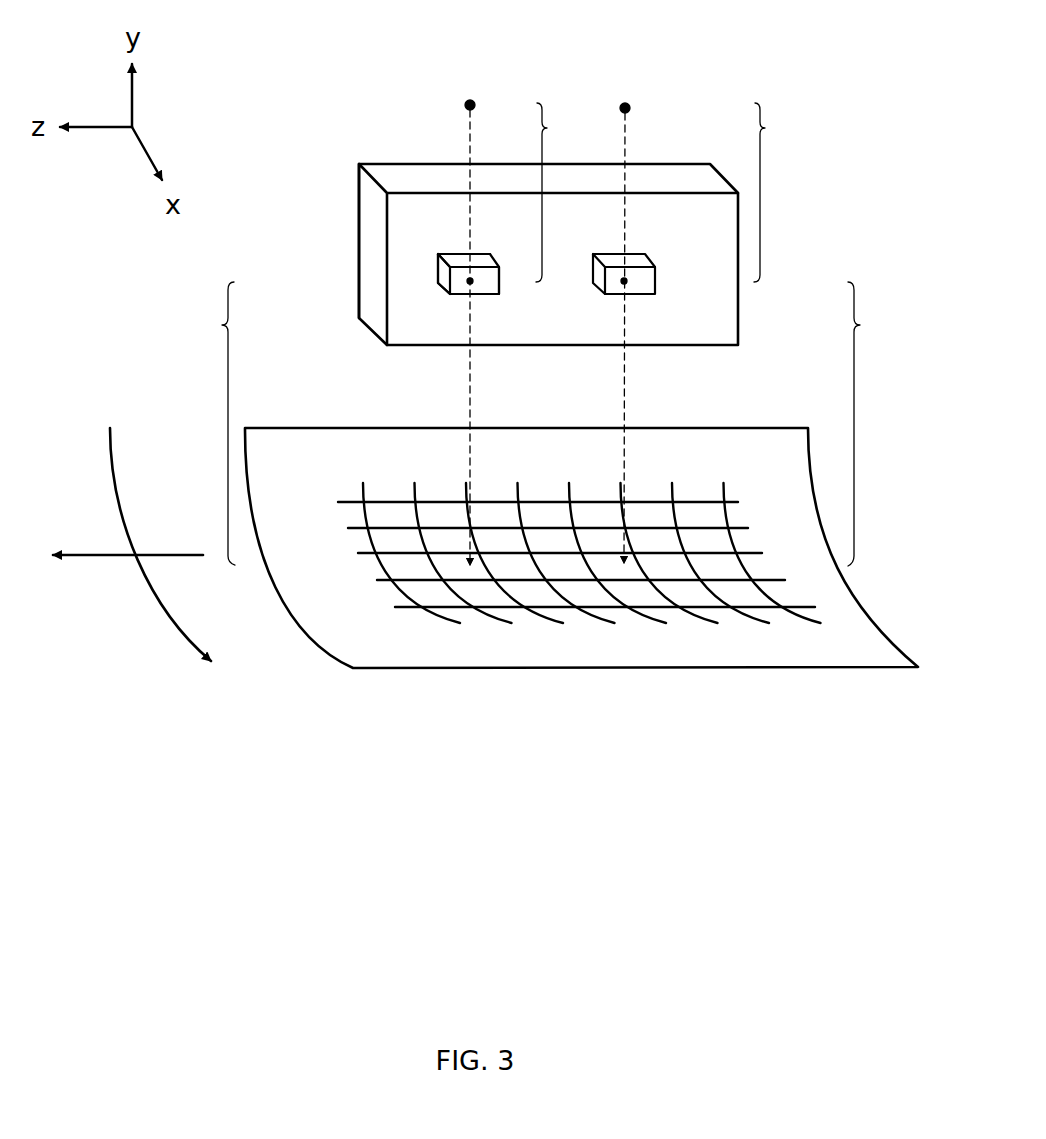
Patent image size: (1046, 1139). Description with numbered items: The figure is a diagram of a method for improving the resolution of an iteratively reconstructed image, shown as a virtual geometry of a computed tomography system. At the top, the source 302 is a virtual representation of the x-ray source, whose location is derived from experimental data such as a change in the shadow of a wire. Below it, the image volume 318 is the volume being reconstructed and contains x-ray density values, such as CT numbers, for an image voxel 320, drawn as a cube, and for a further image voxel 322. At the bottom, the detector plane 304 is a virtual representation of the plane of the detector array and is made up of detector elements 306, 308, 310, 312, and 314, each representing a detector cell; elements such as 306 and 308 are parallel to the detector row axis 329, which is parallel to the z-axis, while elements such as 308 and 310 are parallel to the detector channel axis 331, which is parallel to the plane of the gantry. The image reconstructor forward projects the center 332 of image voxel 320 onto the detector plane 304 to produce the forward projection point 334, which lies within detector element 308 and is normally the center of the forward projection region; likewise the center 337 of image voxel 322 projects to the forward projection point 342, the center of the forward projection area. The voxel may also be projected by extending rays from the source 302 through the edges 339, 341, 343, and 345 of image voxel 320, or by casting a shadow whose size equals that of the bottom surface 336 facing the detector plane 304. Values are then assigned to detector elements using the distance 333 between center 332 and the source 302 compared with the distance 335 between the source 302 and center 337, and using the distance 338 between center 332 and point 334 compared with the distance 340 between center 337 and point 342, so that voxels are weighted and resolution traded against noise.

The source 302 is at (466, 103).
The detector plane 304 is at (798, 426).
The detector element 306 is at (410, 565).
The detector element 308 is at (458, 563).
The detector element 310 is at (501, 595).
The detector element 312 is at (528, 568).
The detector element 314 is at (613, 577).
The image volume 318 is at (370, 162).
The image voxel 320 is at (442, 270).
The image voxel 322 is at (656, 275).
The detector row axis 329 is at (87, 553).
The detector channel axis 331 is at (170, 634).
The center 332 is at (472, 284).
The distance 333 is at (569, 192).
The forward projection point 334 is at (472, 568).
The distance 335 is at (787, 192).
The bottom surface 336 is at (448, 296).
The center 337 is at (628, 285).
The distance 338 is at (196, 423).
The edge 339 is at (437, 263).
The distance 340 is at (883, 424).
The edge 341 is at (448, 253).
The forward projection point 342 is at (642, 583).
The edge 343 is at (500, 287).
The edge 345 is at (491, 255).